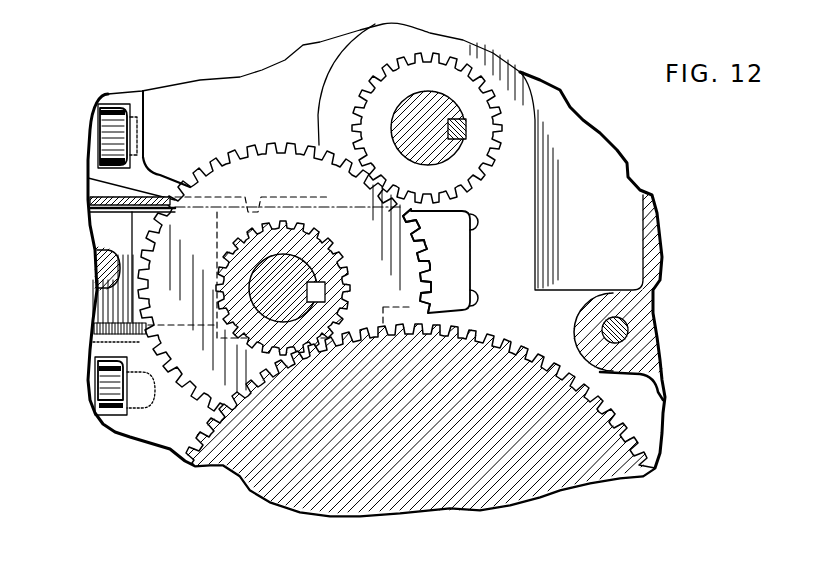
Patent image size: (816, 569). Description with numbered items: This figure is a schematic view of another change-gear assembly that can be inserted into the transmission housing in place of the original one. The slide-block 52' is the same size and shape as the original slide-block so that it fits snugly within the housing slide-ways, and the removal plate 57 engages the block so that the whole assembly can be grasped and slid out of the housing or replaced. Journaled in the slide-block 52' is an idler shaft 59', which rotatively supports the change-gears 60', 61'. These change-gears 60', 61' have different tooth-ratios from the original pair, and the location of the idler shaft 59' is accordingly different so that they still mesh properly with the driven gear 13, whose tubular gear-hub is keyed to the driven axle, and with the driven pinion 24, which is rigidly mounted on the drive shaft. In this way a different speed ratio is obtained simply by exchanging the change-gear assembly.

The driven pinion 24 is at (403, 66).
The removal plate 57 is at (90, 200).
The idler shaft 59' is at (312, 274).
The change-gear 61' is at (307, 288).
The change-gear 60' is at (437, 261).
The slide-block 52' is at (463, 261).
The driven gear 13 is at (604, 408).